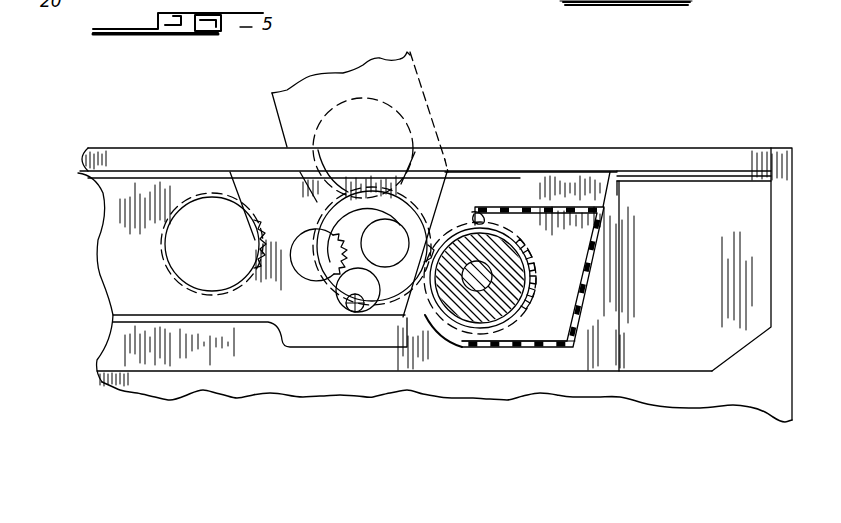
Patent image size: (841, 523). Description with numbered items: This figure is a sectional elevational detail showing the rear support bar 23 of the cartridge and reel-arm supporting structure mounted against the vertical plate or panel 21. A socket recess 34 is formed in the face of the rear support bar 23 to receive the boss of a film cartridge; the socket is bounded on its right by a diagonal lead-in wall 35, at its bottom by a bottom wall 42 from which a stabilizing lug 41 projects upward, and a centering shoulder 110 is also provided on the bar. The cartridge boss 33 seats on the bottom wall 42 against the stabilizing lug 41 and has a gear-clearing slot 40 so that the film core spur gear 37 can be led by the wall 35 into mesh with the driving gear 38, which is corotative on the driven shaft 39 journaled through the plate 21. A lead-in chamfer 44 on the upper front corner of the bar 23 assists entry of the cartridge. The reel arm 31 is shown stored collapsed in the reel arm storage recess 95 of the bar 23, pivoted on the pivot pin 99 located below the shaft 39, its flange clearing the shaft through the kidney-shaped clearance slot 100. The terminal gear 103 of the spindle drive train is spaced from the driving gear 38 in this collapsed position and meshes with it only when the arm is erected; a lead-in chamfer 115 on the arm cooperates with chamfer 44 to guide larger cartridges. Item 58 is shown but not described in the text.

The vertical plate or panel 21 is at (770, 156).
The rear support bar 23 is at (748, 226).
The reel arm 31 is at (173, 200).
The boss structure 33 is at (580, 273).
The socket recess 34 is at (514, 182).
The diagonal lead-in wall 35 is at (610, 188).
The film core spur gear 37 is at (523, 300).
The driving gear 38 is at (318, 266).
The driven shaft 39 is at (373, 249).
The gear-clearing slot 40 is at (462, 221).
The stabilizing lug 41 is at (435, 333).
The bottom wall 42 is at (503, 344).
The lead-in chamfer 44 is at (698, 178).
The lever 58 is at (684, 2).
The reel arm storage recess 95 is at (147, 324).
The pivot pin or stud 99 is at (355, 312).
The kidney-shaped clearance slot 100 is at (310, 250).
The terminal gear 103 is at (316, 171).
The centering shoulder 110 is at (282, 341).
The lead-in chamfer 115 is at (122, 182).